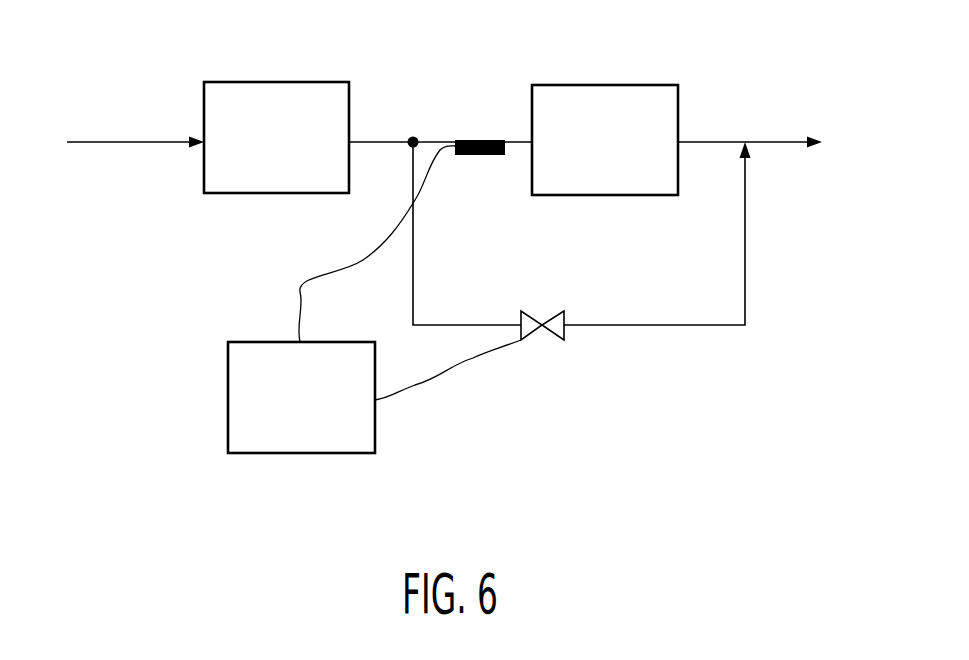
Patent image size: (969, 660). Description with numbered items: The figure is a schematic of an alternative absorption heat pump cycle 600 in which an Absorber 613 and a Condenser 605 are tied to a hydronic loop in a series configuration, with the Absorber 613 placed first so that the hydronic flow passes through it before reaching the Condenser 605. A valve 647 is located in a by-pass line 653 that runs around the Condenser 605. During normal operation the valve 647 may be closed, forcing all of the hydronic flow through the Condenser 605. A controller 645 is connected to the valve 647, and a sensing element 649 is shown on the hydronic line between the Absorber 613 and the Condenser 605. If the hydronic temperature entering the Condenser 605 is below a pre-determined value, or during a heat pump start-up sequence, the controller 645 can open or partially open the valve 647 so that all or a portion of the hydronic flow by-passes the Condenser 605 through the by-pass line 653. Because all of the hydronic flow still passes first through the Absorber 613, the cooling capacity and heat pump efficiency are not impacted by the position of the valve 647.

The heat pump cycle 600 is at (646, 424).
The condenser 605 is at (678, 105).
The absorber 613 is at (204, 110).
The controller 645 is at (228, 402).
The valve 647 is at (553, 315).
The sensor 649 is at (483, 155).
The by-pass line 653 is at (691, 325).